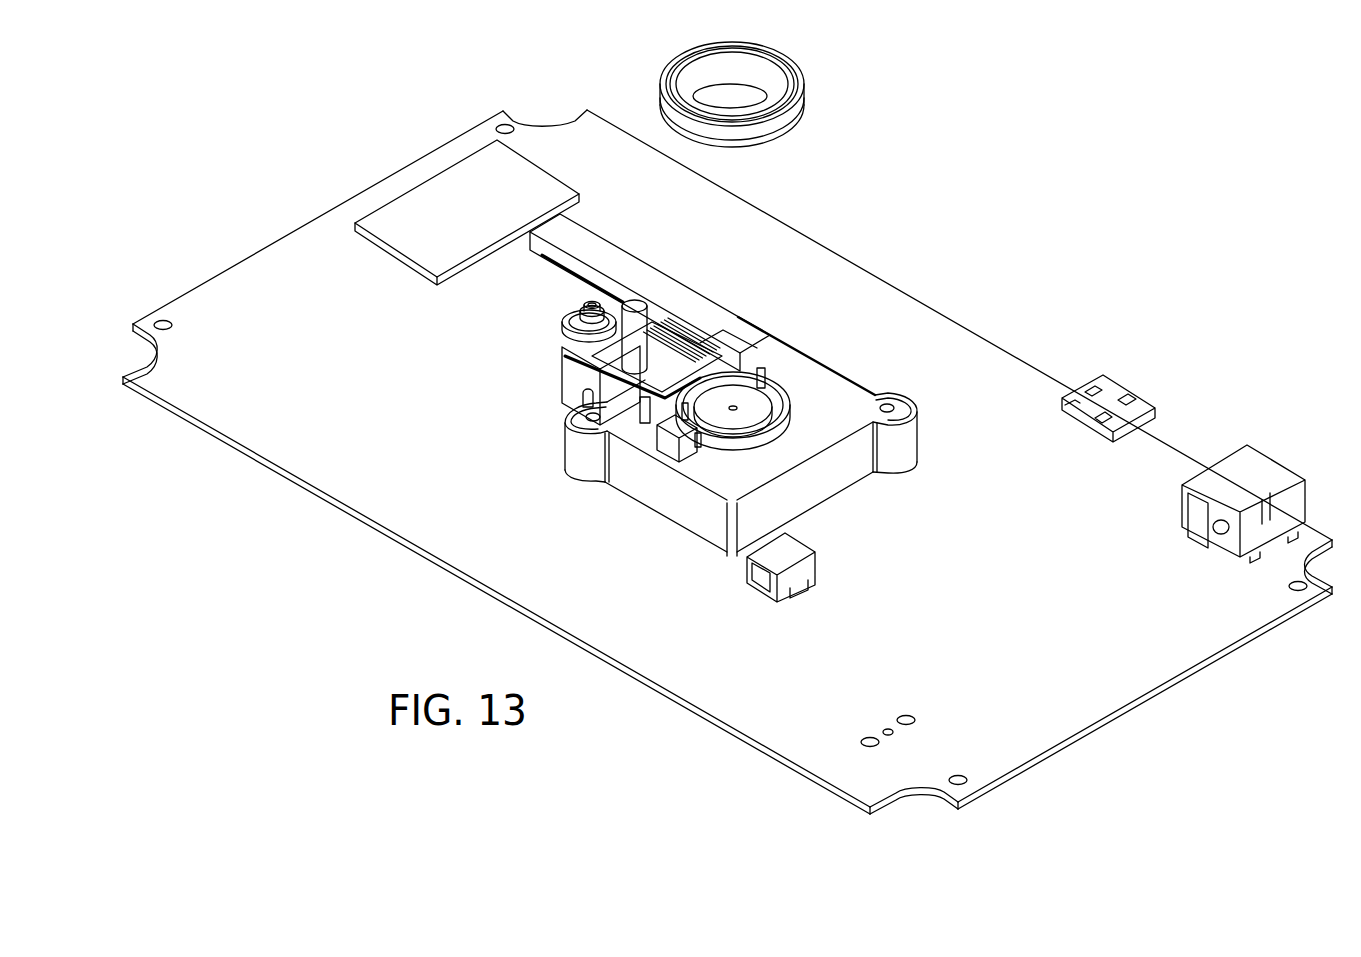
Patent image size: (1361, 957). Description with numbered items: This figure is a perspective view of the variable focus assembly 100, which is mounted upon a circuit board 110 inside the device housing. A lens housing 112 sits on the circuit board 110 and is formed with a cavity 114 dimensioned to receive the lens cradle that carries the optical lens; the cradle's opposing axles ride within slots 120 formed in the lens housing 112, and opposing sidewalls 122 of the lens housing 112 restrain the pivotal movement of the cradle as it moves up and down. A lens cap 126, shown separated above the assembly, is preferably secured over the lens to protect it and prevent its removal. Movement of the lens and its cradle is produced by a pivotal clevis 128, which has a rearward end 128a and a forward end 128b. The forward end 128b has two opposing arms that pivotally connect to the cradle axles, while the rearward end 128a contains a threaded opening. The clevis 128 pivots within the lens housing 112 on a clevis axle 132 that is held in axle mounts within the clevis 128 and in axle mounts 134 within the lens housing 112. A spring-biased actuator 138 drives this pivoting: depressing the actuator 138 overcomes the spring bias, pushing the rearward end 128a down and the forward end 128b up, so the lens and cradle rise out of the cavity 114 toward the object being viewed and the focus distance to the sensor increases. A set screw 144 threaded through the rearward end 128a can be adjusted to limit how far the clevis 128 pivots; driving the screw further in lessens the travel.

The variable focus assembly 100 is at (988, 212).
The circuit board 110 is at (1012, 356).
The lens housing 112 is at (853, 382).
The cavity 114 is at (746, 373).
The slots 120 is at (771, 380).
The sidewalls 122 is at (768, 427).
The lens cap 126 is at (797, 88).
The pivotal clevis 128 is at (660, 412).
The rearward end of clevis 128a is at (565, 350).
The forward end of clevis 128b is at (684, 440).
The clevis axle 132 is at (657, 350).
The axle mounts 134 is at (700, 344).
The actuator 138 is at (636, 308).
The set screw 144 is at (580, 306).